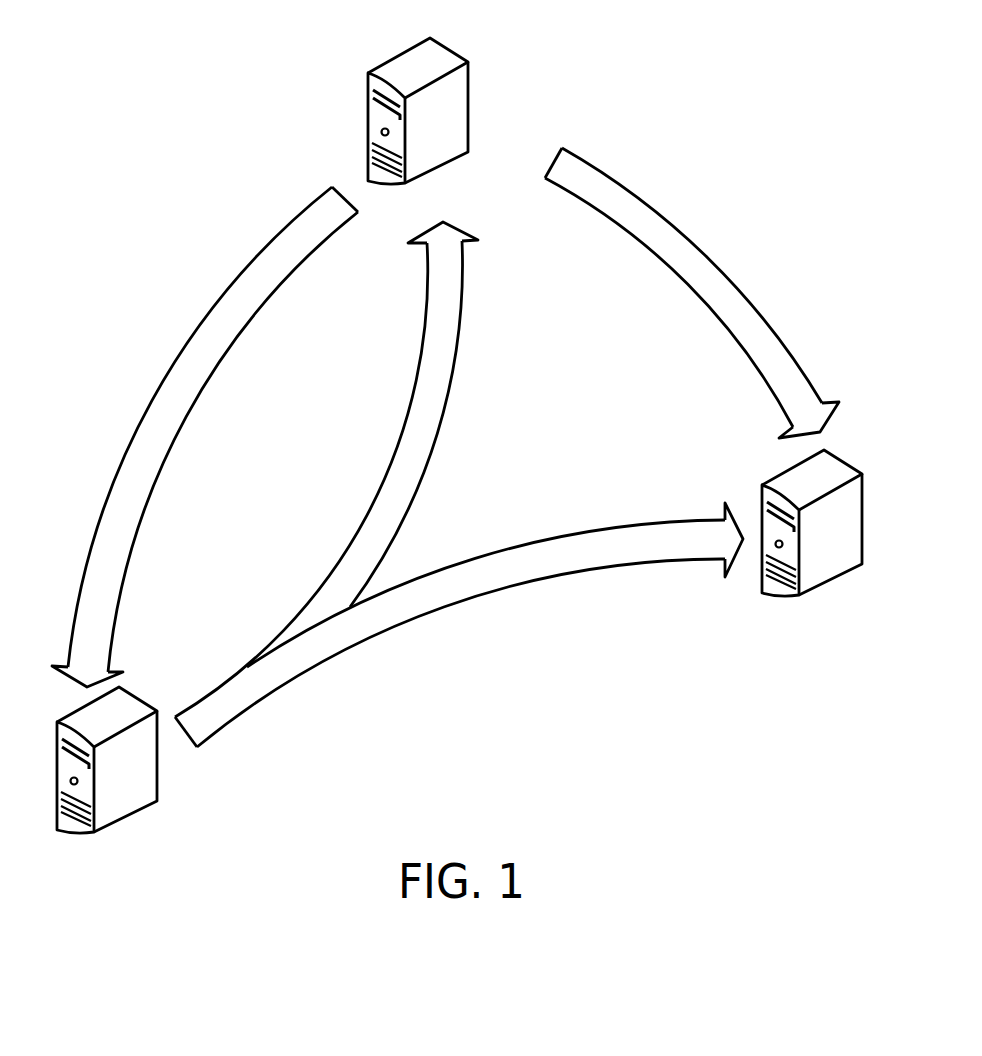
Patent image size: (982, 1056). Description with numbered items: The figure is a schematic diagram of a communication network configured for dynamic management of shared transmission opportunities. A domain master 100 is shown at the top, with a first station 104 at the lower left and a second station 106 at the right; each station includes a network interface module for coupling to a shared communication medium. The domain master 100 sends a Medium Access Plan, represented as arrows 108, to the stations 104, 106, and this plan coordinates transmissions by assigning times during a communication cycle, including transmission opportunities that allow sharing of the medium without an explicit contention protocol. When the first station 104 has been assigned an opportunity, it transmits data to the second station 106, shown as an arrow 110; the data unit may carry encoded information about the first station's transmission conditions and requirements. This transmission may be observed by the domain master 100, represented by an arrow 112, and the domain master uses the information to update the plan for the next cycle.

The domain master 100 is at (420, 57).
The first station 104 is at (143, 781).
The second station 106 is at (818, 567).
The arrows 108 is at (260, 255).
The arrow 110 is at (572, 532).
The arrow 112 is at (458, 343).